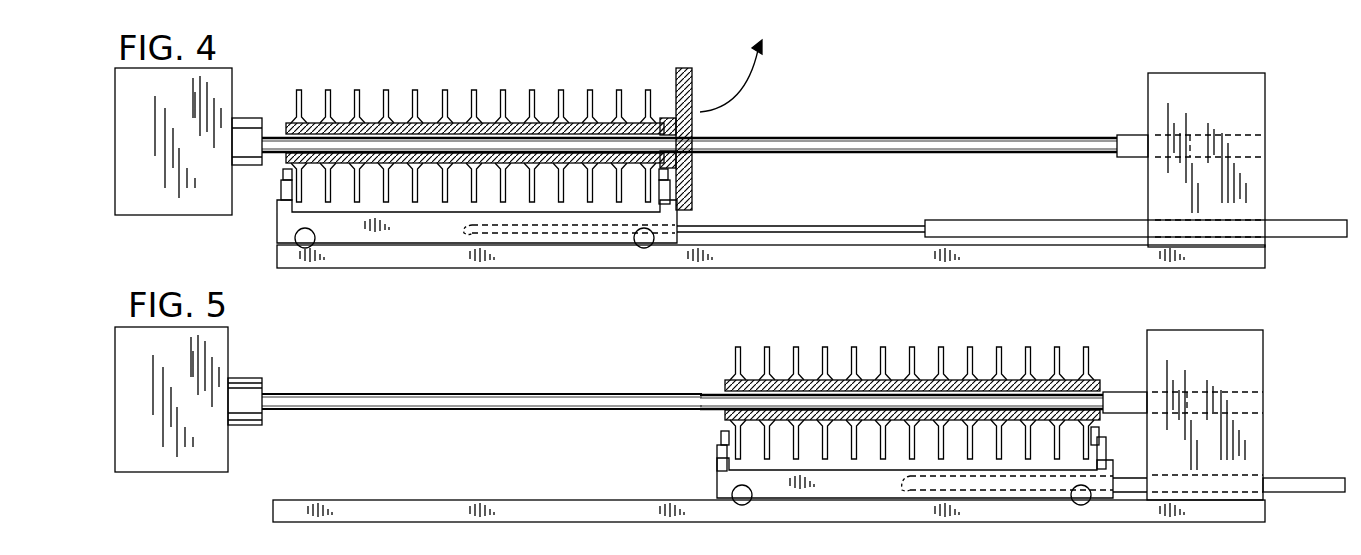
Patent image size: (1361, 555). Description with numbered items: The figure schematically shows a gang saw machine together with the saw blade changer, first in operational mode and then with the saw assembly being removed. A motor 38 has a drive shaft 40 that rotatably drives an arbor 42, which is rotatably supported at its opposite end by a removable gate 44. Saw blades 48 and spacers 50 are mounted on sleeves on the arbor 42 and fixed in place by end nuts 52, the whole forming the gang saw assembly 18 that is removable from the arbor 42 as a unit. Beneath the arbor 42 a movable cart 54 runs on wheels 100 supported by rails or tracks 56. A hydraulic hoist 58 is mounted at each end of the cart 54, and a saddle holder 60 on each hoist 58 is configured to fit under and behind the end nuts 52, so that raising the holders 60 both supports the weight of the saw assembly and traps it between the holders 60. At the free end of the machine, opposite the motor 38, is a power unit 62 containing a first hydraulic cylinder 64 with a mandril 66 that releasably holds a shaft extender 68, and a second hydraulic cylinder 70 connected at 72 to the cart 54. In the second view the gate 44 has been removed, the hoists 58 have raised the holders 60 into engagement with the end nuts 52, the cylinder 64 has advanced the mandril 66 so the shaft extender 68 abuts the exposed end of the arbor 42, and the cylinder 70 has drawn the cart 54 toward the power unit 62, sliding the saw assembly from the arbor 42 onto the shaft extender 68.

In FIG. 4, the gang saw assembly 18 is at (477, 114).
In FIG. 5, the gang saw assembly 18 is at (907, 376).
In FIG. 4, the motor 38 is at (191, 150).
In FIG. 5, the motor 38 is at (188, 410).
In FIG. 4, the drive shaft 40 is at (252, 118).
In FIG. 5, the drive shaft 40 is at (248, 420).
In FIG. 4, the arbor 42 is at (343, 138).
In FIG. 5, the arbor 42 is at (338, 396).
In FIG. 4, the removable gate 44 is at (690, 96).
In FIG. 4, the saw blades 48 is at (445, 90).
In FIG. 5, the saw blades 48 is at (883, 347).
In FIG. 4, the spacers 50 is at (478, 123).
In FIG. 5, the spacers 50 is at (899, 380).
In FIG. 4, the end nuts 52 is at (297, 120).
In FIG. 5, the end nuts 52 is at (733, 378).
In FIG. 4, the movable cart 54 is at (477, 251).
In FIG. 5, the movable cart 54 is at (915, 506).
In FIG. 4, the tracks 56 is at (512, 262).
In FIG. 5, the tracks 56 is at (545, 522).
In FIG. 4, the hydraulic hoist 58 is at (286, 190).
In FIG. 5, the hydraulic hoist 58 is at (717, 455).
In FIG. 4, the saddle holder 60 is at (283, 174).
In FIG. 5, the saddle holder 60 is at (721, 436).
In FIG. 4, the power unit 62 is at (1235, 140).
In FIG. 5, the power unit 62 is at (1234, 396).
In FIG. 4, the first hydraulic cylinder 64 is at (1222, 135).
In FIG. 5, the first hydraulic cylinder 64 is at (1220, 392).
In FIG. 4, the mandril 66 is at (1136, 135).
In FIG. 5, the mandril 66 is at (1125, 392).
In FIG. 4, the shaft extender 68 is at (895, 137).
In FIG. 5, the shaft extender 68 is at (768, 380).
In FIG. 4, the second hydraulic cylinder 70 is at (1048, 220).
In FIG. 5, the second hydraulic cylinder 70 is at (1305, 478).
In FIG. 4, the connection 72 is at (462, 234).
In FIG. 5, the connection 72 is at (900, 492).
In FIG. 4, the wheels 100 is at (305, 248).
In FIG. 5, the wheels 100 is at (743, 505).